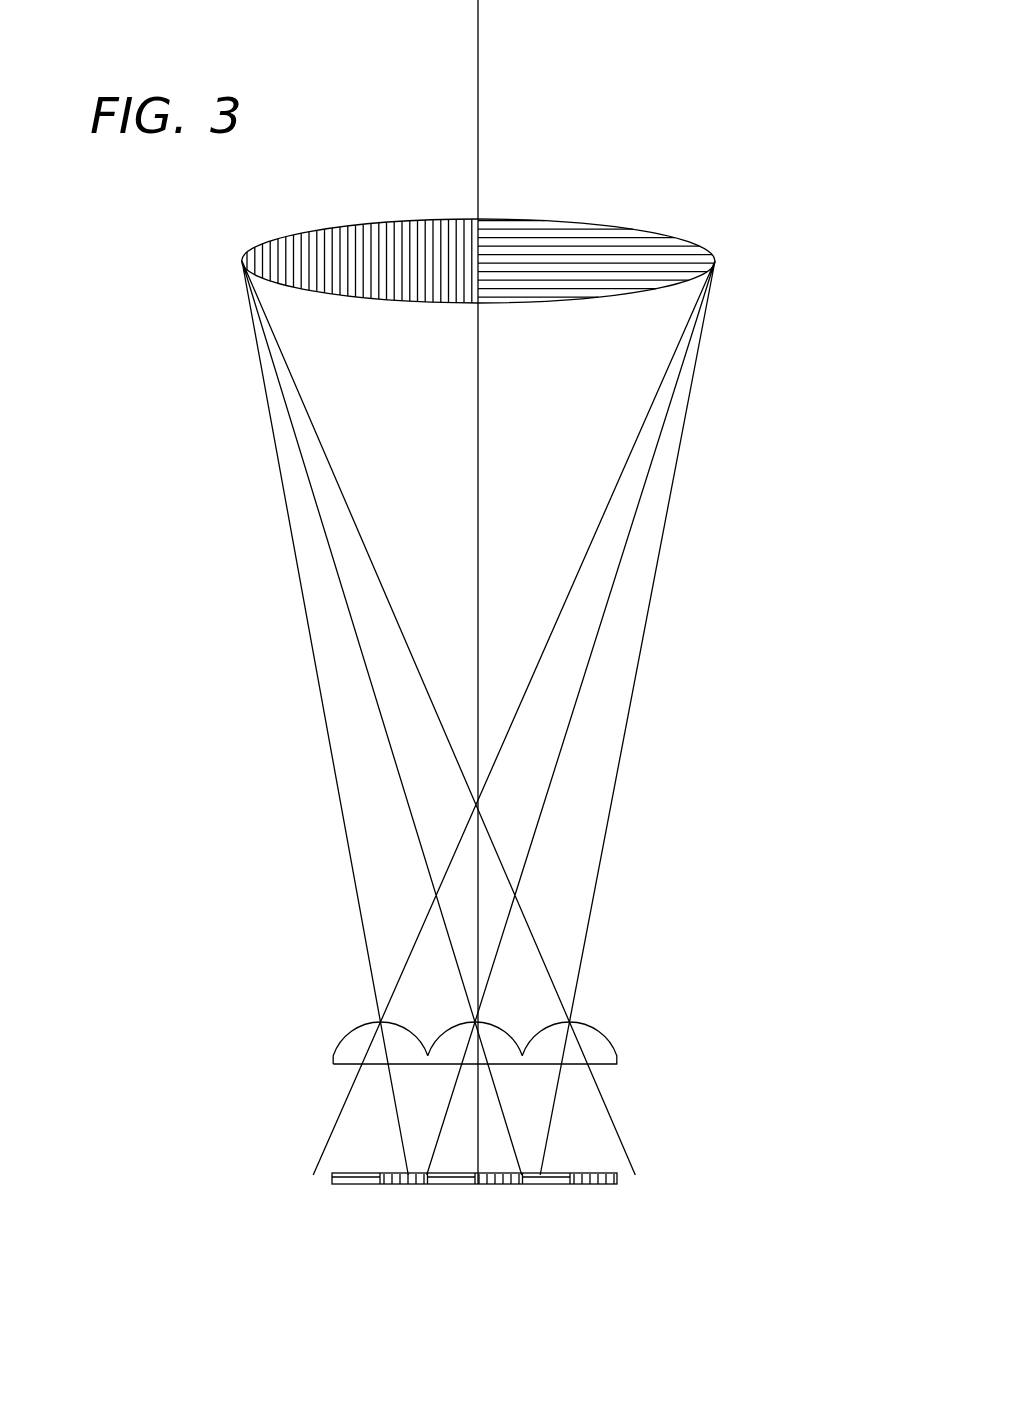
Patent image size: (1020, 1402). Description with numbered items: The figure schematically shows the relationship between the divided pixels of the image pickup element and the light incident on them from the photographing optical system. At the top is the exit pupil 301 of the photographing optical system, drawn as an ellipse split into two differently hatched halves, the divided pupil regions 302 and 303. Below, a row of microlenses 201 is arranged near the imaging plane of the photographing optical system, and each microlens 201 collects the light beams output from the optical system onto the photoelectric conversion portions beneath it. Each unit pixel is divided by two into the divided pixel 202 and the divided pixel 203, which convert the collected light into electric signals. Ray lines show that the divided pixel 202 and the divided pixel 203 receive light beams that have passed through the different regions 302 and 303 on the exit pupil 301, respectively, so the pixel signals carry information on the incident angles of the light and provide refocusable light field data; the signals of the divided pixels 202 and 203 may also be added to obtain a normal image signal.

The microlens 201 is at (608, 1033).
The divided pixel 202 is at (590, 1268).
The divided pixel 203 is at (542, 1233).
The exit pupil 301 is at (495, 217).
The divided pupil region 302 is at (318, 245).
The divided pupil region 303 is at (610, 243).